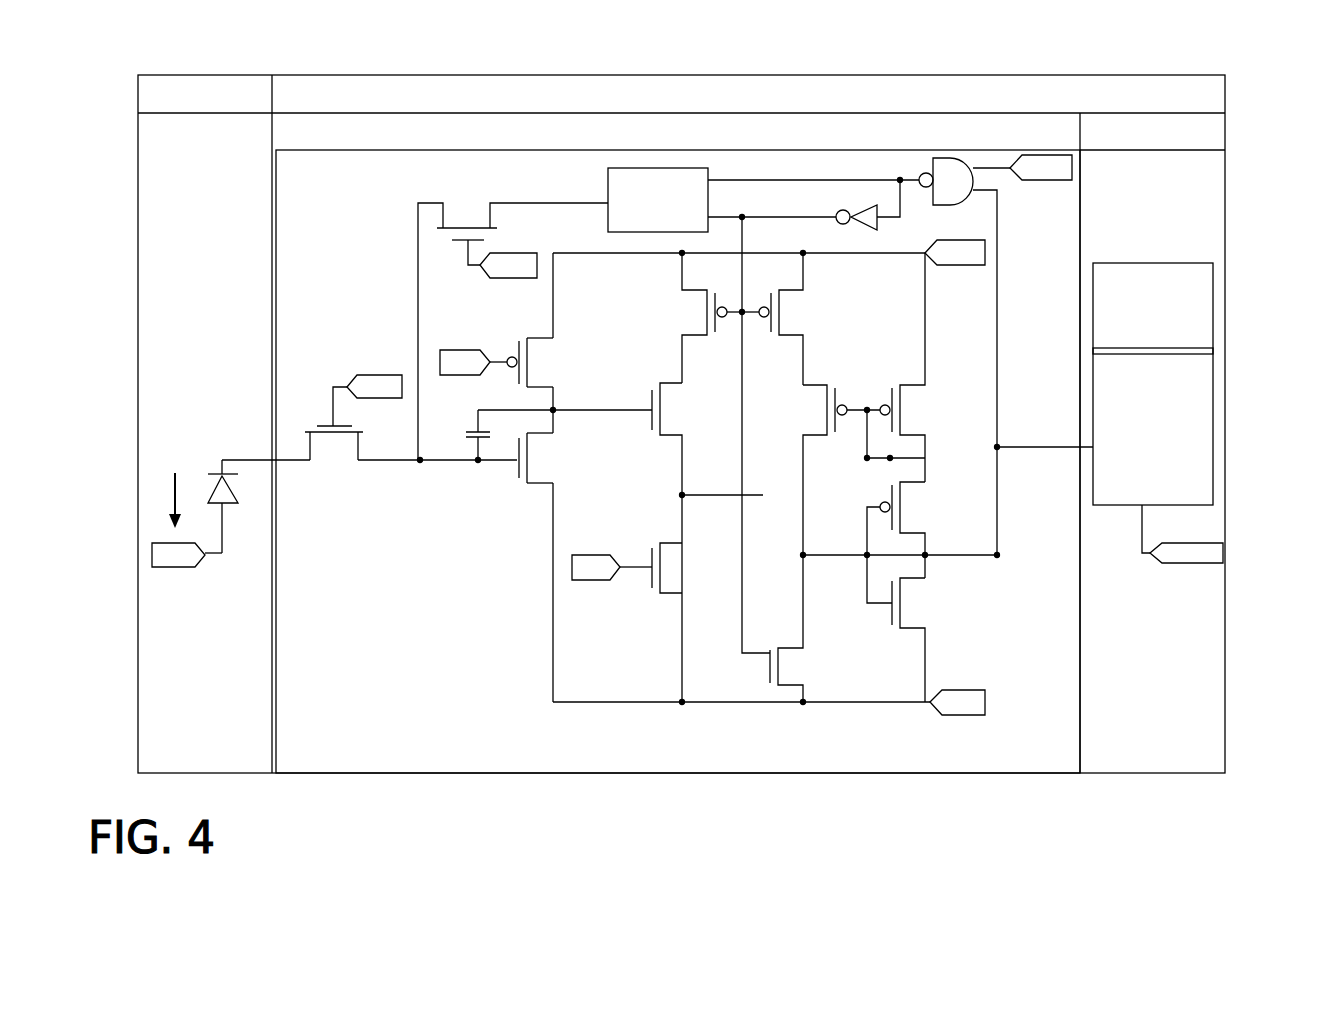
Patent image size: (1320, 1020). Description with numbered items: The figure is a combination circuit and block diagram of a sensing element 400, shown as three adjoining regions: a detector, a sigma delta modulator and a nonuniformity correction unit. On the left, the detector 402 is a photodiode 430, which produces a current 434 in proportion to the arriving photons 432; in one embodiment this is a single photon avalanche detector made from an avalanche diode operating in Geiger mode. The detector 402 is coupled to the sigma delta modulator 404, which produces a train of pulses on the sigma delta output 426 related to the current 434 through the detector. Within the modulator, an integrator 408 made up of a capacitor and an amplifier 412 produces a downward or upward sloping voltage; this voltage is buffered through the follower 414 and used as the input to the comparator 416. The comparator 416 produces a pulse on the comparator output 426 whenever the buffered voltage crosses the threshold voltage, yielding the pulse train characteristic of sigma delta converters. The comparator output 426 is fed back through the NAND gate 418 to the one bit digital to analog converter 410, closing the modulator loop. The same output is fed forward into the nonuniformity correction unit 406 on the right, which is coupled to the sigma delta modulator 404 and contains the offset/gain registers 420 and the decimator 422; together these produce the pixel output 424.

The sensing element 400 is at (691, 824).
The detector 402 is at (176, 307).
The sigma delta modulator 404 is at (316, 276).
The nonuniformity correction unit 406 is at (1124, 216).
The integrator 408 is at (387, 480).
The one bit digital to analog converter 410 is at (641, 168).
The amplifier 412 is at (515, 682).
The follower 414 is at (748, 705).
The comparator 416 is at (763, 705).
The NAND gate 418 is at (946, 158).
The offset/gain registers 420 is at (1205, 322).
The decimator 422 is at (1205, 456).
The pixel output 424 is at (1141, 540).
The comparator output 426 is at (997, 537).
The photodiode 430 is at (212, 492).
The arriving photons 432 is at (253, 494).
The current 434 is at (174, 485).